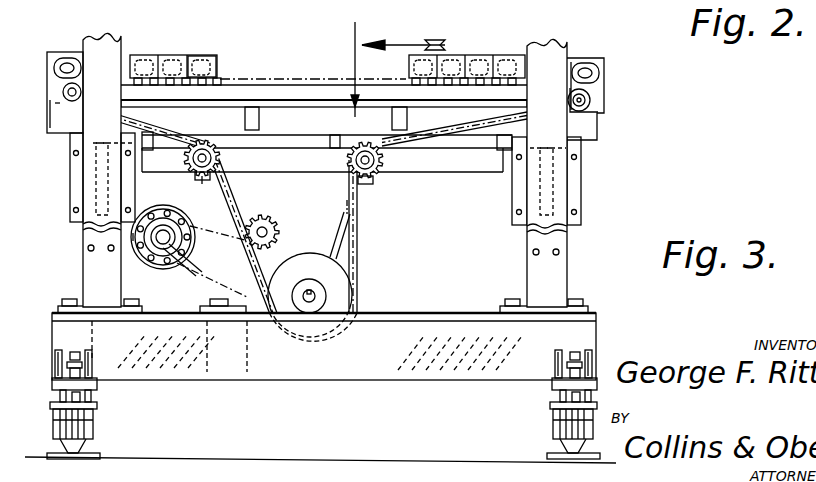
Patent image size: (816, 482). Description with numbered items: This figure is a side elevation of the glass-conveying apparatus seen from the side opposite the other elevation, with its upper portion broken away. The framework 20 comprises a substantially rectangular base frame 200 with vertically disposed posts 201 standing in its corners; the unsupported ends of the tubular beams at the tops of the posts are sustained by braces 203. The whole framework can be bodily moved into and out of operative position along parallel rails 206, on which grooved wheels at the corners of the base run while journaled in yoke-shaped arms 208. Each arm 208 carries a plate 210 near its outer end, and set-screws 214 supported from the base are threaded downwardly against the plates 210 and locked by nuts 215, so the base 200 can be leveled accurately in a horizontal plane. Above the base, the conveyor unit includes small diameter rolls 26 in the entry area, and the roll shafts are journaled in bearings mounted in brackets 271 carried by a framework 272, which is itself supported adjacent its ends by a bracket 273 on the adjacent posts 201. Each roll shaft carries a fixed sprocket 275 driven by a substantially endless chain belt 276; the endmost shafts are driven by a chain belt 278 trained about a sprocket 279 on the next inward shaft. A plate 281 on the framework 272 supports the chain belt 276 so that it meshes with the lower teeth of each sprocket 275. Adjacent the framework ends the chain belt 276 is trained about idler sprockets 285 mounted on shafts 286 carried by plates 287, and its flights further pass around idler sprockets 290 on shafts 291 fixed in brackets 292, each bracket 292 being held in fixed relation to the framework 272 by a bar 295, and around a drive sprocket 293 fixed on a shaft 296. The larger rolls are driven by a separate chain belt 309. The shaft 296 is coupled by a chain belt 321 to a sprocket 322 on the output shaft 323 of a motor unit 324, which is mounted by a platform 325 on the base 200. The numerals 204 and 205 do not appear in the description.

The framework 20 is at (610, 148).
The small diameter rolls 26 is at (595, 48).
The base frame 200 is at (351, 390).
The posts 201 is at (88, 53).
The braces 203 is at (92, 232).
The column 204 is at (131, 47).
The frame member 205 is at (194, 5).
The rails 206 is at (560, 455).
The yoke-shaped arms 208 is at (93, 428).
The plate 210 is at (97, 404).
The set-screws 214 is at (553, 380).
The nuts 215 is at (558, 395).
The brackets 271 is at (210, 60).
The framework 272 is at (391, 58).
The bracket 273 is at (553, 181).
The fixed sprocket 275 is at (173, 62).
The chain belt 276 is at (268, 78).
The chain belt 278 is at (604, 78).
The sprocket 279 is at (598, 72).
The plate 281 is at (305, 88).
The idler sprockets 285 is at (590, 100).
The shafts 286 is at (604, 112).
The plates 287 is at (245, 119).
The idler sprockets 290 is at (190, 168).
The shafts 291 is at (202, 176).
The brackets 292 is at (375, 184).
The drive sprocket 293 is at (340, 292).
The bar 295 is at (474, 165).
The shaft 296 is at (309, 302).
The chain belt 309 is at (334, 242).
The chain belt 321 is at (190, 267).
The sprocket 322 is at (187, 238).
The output shaft 323 is at (137, 243).
The motor unit 324 is at (215, 222).
The platform 325 is at (165, 316).